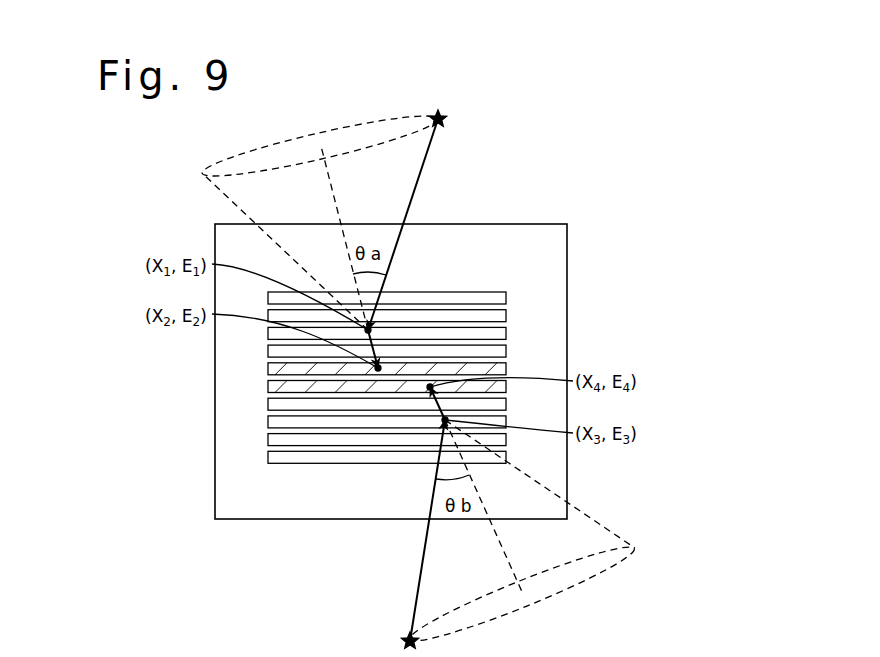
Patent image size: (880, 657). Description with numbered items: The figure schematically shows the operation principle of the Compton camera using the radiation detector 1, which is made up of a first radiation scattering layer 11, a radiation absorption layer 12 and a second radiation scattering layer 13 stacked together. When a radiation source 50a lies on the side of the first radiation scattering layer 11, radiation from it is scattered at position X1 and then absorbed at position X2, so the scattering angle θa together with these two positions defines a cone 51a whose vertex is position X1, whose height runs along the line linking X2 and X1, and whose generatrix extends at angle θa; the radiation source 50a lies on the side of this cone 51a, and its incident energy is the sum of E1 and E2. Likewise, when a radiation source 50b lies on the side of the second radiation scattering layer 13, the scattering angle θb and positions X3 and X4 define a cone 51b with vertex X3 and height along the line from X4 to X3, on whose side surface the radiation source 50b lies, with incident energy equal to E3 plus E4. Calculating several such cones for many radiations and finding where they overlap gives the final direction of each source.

The radiation detector 1 is at (505, 192).
The first radiation scattering layer 11 is at (521, 297).
The radiation absorption layer 12 is at (251, 358).
The second radiation scattering layer 13 is at (251, 405).
The radiation source 50a is at (445, 118).
The radiation source 50b is at (404, 641).
The cone 51a is at (250, 206).
The cone 51b is at (596, 520).